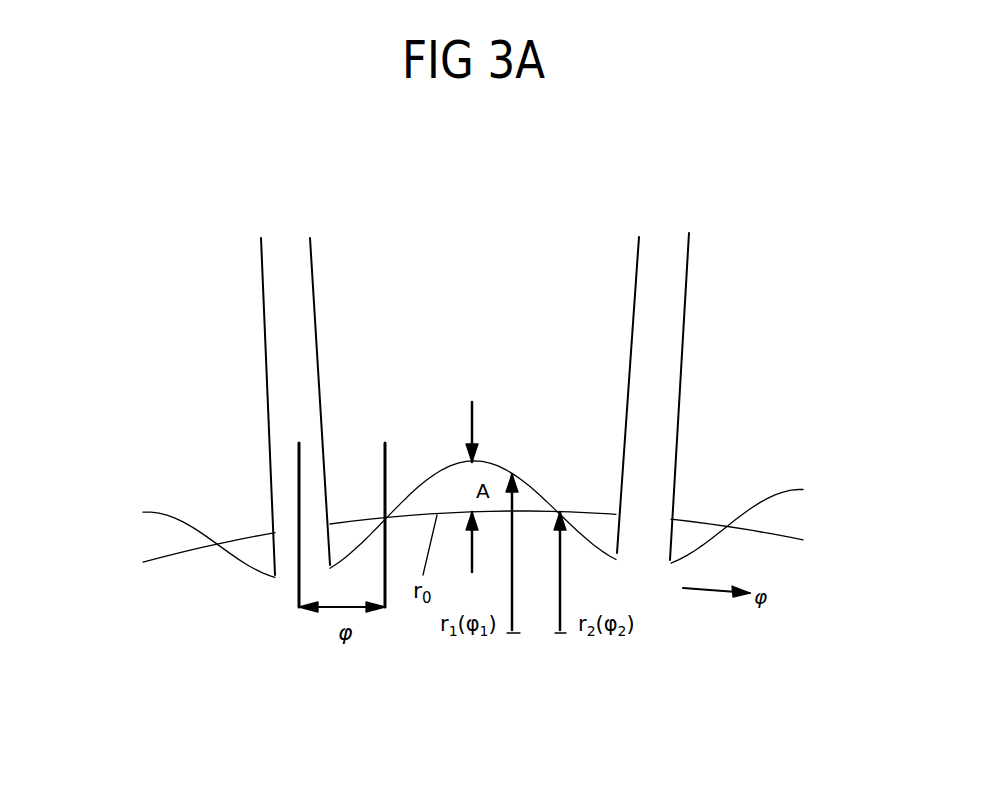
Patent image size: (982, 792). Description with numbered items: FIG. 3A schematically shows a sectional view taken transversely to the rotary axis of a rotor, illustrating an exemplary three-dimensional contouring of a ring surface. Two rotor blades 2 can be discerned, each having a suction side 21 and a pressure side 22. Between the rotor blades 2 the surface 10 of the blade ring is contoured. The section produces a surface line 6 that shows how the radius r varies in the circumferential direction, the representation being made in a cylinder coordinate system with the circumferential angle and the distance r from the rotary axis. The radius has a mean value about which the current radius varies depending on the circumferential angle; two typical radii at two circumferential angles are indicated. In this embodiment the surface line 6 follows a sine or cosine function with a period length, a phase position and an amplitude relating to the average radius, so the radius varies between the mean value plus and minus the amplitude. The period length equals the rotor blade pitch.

The rotor blade 2 is at (305, 379).
The surface line 6 is at (423, 487).
The surface of the blade ring 10 is at (568, 288).
The suction side 21 is at (262, 320).
The pressure side 22 is at (317, 318).